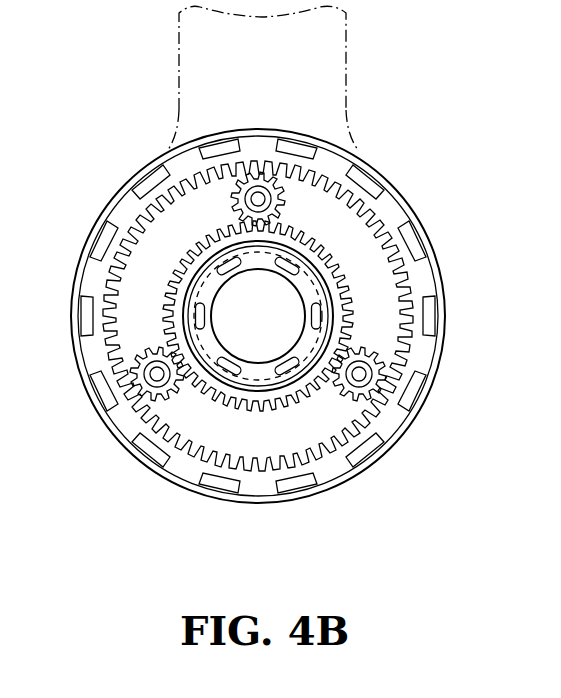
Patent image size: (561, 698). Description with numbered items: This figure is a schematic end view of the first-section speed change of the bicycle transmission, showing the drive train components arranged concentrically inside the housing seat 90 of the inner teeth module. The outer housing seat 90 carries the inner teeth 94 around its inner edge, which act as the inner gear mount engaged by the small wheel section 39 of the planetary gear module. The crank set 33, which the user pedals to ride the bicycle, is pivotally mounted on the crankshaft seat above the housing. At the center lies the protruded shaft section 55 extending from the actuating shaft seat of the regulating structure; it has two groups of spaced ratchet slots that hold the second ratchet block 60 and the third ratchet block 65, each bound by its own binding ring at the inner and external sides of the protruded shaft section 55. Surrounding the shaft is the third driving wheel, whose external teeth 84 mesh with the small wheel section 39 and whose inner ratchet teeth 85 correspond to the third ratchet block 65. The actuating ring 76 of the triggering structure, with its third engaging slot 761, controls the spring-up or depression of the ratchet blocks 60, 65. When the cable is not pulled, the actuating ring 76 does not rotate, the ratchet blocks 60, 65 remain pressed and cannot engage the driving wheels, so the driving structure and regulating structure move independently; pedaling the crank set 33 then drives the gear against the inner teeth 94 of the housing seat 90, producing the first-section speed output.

The crank set 33 is at (186, 57).
The small wheel section 39 is at (138, 390).
The protruded shaft section 55 is at (286, 344).
The second ratchet block 60 is at (227, 267).
The third ratchet block 65 is at (293, 263).
The actuating ring 76 is at (300, 365).
The third engaging slot 761 is at (333, 342).
The external teeth 84 is at (316, 371).
The inner ratchet teeth 85 is at (227, 378).
The housing seat 90 is at (92, 240).
The inner teeth 94 is at (90, 282).